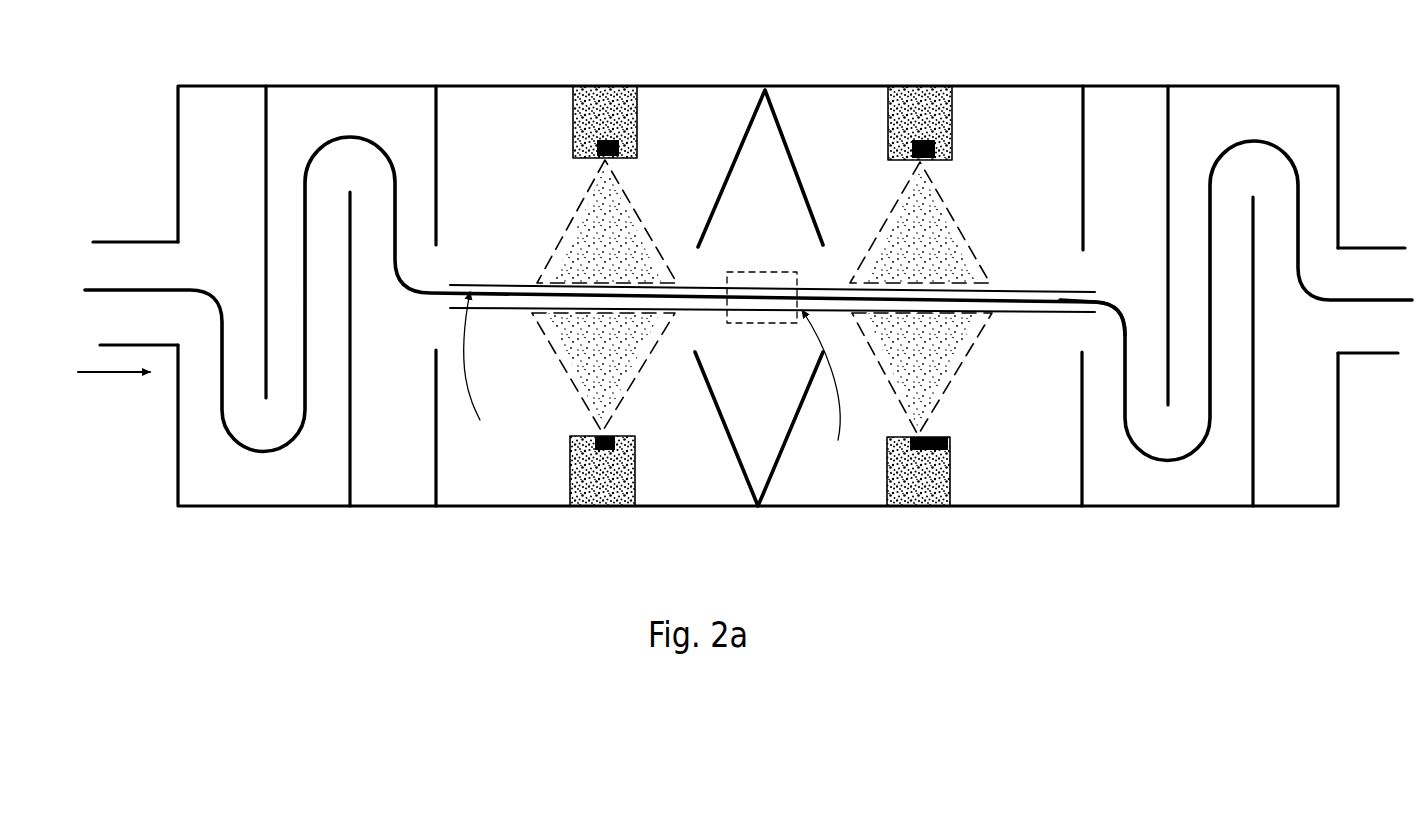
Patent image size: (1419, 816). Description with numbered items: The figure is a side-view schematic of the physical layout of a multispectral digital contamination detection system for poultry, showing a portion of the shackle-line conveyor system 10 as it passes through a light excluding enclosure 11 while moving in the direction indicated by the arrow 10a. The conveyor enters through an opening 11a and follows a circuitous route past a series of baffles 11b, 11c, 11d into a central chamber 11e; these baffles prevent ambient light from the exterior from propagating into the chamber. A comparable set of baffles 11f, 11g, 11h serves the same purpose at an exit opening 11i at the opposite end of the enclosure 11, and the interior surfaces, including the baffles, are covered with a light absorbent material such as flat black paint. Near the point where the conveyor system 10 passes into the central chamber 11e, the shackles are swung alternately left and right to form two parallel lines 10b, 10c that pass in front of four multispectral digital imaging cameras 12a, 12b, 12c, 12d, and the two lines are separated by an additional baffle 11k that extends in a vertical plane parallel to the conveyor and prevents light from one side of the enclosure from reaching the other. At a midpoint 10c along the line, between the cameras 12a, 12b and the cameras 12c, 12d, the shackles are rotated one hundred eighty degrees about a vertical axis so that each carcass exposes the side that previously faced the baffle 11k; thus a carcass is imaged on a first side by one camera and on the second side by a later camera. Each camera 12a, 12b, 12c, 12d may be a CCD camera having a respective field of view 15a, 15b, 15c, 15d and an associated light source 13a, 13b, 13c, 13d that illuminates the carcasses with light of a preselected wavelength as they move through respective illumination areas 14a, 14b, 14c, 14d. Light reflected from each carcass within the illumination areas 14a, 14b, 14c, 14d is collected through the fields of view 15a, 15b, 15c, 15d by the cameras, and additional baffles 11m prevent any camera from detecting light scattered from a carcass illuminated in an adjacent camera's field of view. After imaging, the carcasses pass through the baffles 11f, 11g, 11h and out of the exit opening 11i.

The conveyor system 10 is at (190, 290).
The direction of travel arrow 10a is at (86, 370).
The parallel conveyor line 10b is at (478, 285).
The midpoint of conveyor line 10c is at (792, 268).
The light excluding enclosure 11 is at (530, 72).
The entrance opening 11a is at (136, 242).
The baffle 11b is at (266, 150).
The baffle 11c is at (350, 432).
The baffle 11d is at (436, 176).
The central chamber 11e is at (1038, 392).
The exit baffle 11f is at (1083, 140).
The exit baffle 11g is at (1168, 218).
The exit baffle 11h is at (1253, 424).
The exit opening 11i is at (1382, 355).
The separating baffle 11k is at (1098, 296).
The additional baffles 11m is at (810, 186).
The multispectral digital imaging camera 12a is at (575, 495).
The multispectral digital imaging camera 12b is at (640, 118).
The multispectral digital imaging camera 12c is at (945, 490).
The multispectral digital imaging camera 12d is at (955, 118).
The light source 13a is at (610, 446).
The light source 13b is at (612, 148).
The light source 13c is at (925, 448).
The light source 13d is at (928, 150).
The illumination area 14a is at (618, 384).
The illumination area 14b is at (618, 236).
The illumination area 14c is at (962, 326).
The illumination area 14d is at (948, 242).
The field of view 15a is at (566, 380).
The field of view 15b is at (568, 220).
The field of view 15c is at (892, 402).
The field of view 15d is at (890, 214).